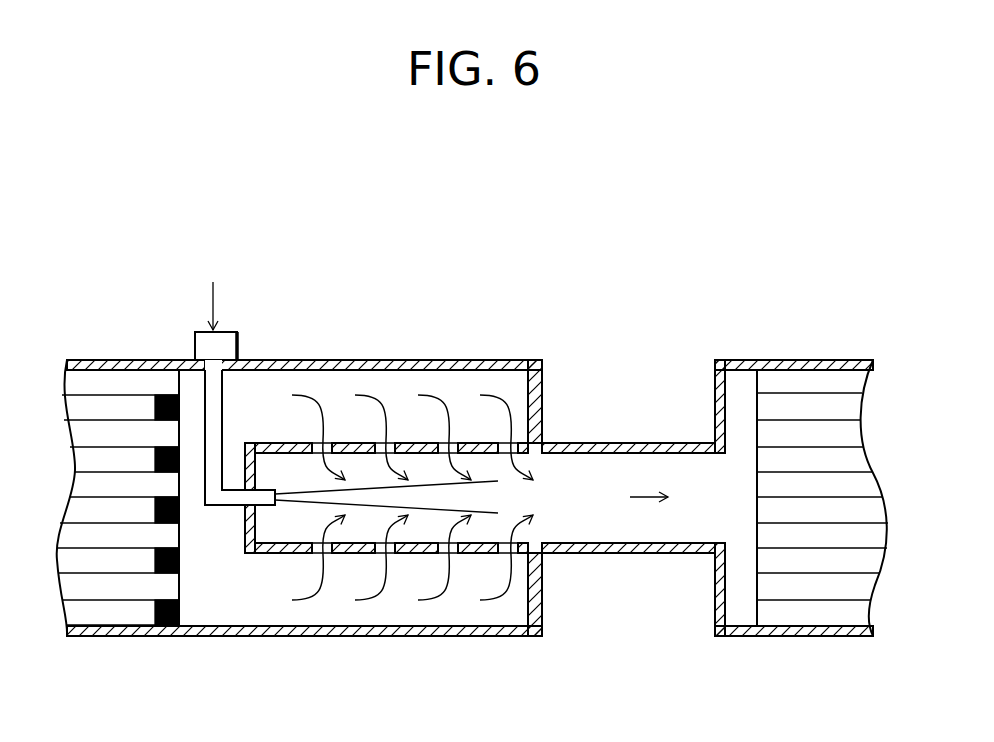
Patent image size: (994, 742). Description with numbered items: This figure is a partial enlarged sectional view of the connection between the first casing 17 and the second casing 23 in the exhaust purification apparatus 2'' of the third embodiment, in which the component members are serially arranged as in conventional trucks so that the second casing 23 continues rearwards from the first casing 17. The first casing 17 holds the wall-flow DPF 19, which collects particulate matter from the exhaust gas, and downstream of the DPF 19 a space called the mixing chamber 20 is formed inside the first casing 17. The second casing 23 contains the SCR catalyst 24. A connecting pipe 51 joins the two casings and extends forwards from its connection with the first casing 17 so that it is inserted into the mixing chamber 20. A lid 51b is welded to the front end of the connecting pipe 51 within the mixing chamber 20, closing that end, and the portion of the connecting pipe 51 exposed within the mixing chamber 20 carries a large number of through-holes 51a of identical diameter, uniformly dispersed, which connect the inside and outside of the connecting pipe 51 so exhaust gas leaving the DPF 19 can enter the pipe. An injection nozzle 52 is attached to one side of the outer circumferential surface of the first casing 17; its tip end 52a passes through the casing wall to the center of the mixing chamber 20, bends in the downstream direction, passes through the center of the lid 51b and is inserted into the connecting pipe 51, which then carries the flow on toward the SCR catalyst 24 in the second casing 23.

The exhaust purification apparatus 2'' is at (472, 453).
The first casing 17 is at (85, 637).
The DPF 19 is at (130, 608).
The mixing chamber 20 is at (212, 578).
The second casing 23 is at (768, 637).
The SCR catalyst 24 is at (825, 610).
The connecting pipe 51 is at (619, 555).
The through-holes 51a is at (387, 544).
The lid 51b is at (246, 540).
The injection nozzle 52 is at (203, 342).
The tip end 52a is at (215, 405).